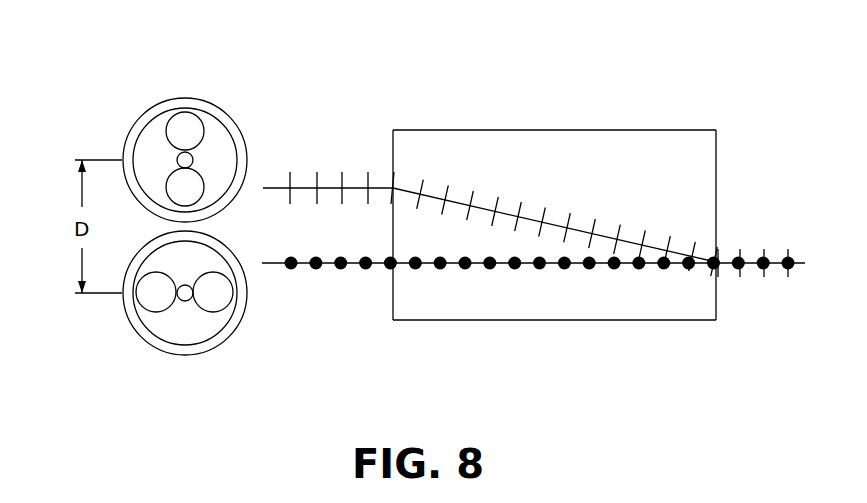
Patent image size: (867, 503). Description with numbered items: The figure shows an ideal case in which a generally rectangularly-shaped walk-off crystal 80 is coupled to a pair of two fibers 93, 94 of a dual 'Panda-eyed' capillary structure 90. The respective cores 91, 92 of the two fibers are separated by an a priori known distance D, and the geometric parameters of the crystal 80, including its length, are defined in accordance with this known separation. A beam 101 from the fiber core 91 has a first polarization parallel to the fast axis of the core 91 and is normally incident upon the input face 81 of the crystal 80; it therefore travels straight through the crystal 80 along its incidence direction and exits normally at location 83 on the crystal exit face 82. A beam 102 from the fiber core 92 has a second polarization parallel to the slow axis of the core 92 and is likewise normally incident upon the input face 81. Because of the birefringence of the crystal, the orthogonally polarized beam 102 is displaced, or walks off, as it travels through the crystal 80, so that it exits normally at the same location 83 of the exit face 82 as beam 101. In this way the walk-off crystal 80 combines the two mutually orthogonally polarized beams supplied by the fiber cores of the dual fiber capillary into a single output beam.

The dual 'Panda-eyed' capillary structure 90 is at (159, 129).
The fiber 94 is at (183, 99).
The fiber core 92 is at (193, 153).
The fiber 93 is at (130, 323).
The fiber core 91 is at (183, 300).
The beam 102 is at (280, 188).
The beam 101 is at (273, 263).
The walk-off crystal 80 is at (592, 218).
The input face 81 is at (393, 298).
The crystal exit face 82 is at (716, 160).
The location 83 is at (730, 266).